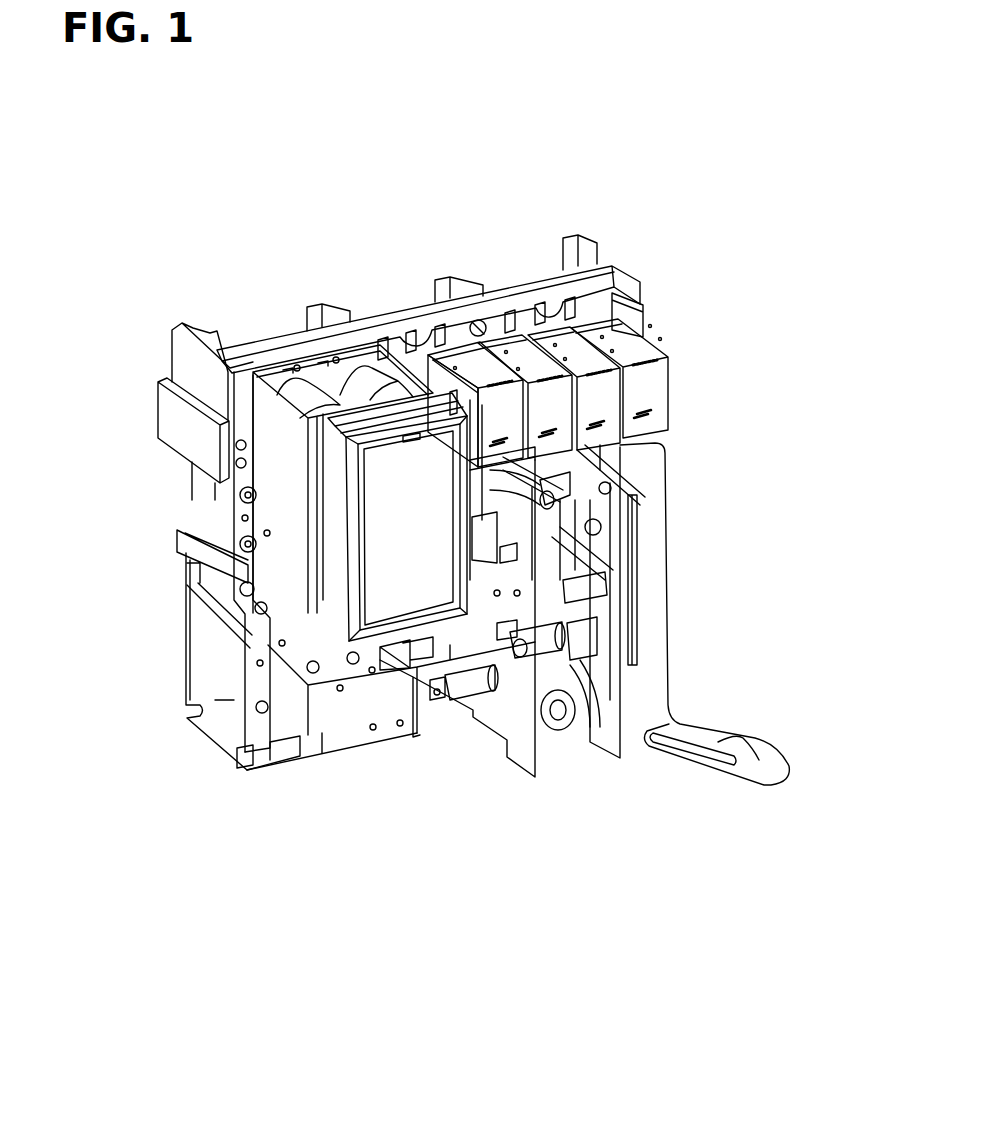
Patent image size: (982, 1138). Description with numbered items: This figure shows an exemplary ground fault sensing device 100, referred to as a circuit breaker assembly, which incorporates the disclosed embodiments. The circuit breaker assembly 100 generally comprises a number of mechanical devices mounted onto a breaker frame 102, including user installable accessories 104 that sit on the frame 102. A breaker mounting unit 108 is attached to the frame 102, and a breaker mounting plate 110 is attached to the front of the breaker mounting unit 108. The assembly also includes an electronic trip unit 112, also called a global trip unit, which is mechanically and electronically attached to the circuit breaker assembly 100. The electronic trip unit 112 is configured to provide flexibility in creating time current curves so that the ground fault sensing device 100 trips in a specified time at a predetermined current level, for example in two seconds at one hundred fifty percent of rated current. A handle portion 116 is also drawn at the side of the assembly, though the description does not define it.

The ground fault sensing device 100 is at (455, 811).
The breaker frame 102 is at (193, 367).
The user installable accessories 104 is at (597, 396).
The breaker mounting unit 108 is at (326, 382).
The breaker mounting plate 110 is at (320, 558).
The electronic trip unit 112 is at (422, 536).
The handle 116 is at (668, 732).